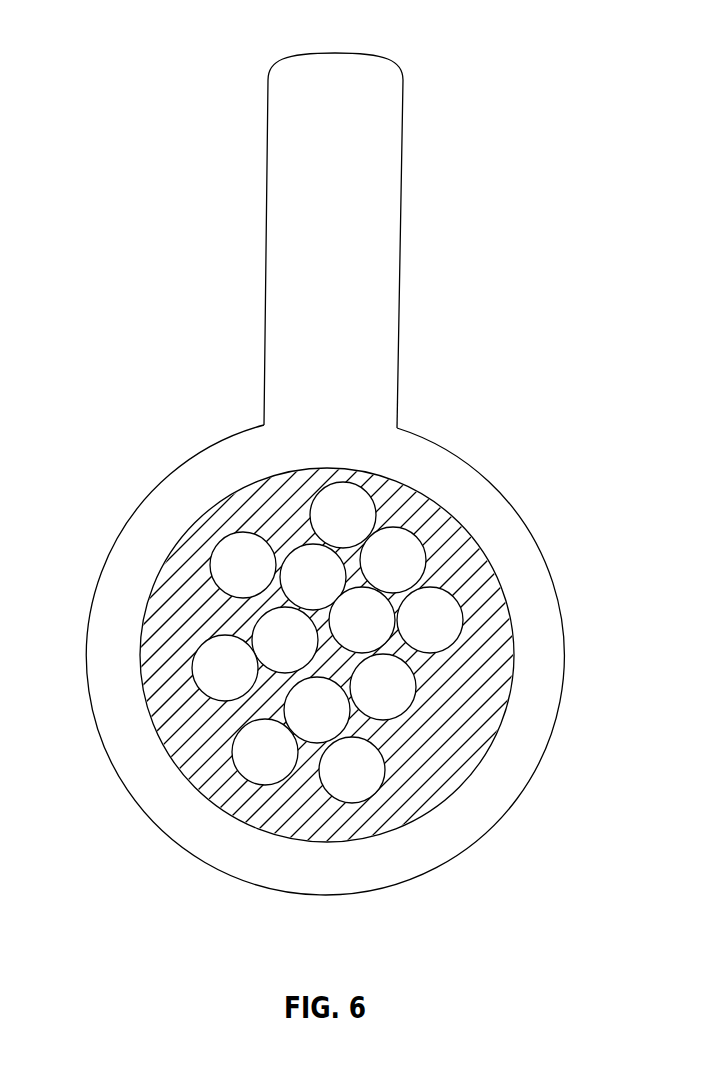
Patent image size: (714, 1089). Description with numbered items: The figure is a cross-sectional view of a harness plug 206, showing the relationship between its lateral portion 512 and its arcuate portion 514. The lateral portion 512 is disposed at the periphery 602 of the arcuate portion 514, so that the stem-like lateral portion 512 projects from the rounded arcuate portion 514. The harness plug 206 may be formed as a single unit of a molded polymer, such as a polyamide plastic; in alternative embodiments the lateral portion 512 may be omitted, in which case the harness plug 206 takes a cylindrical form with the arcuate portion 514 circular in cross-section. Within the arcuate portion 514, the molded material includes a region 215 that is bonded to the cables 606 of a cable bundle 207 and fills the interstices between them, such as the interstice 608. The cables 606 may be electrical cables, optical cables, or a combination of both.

The harness plug 206 is at (320, 474).
The lateral portion 512 is at (267, 256).
The periphery 602 is at (421, 411).
The arcuate portion 514 is at (140, 508).
The cable bundle 207 is at (440, 573).
The region 215 is at (467, 728).
The interstice 608 is at (243, 707).
The cables 606 is at (273, 633).